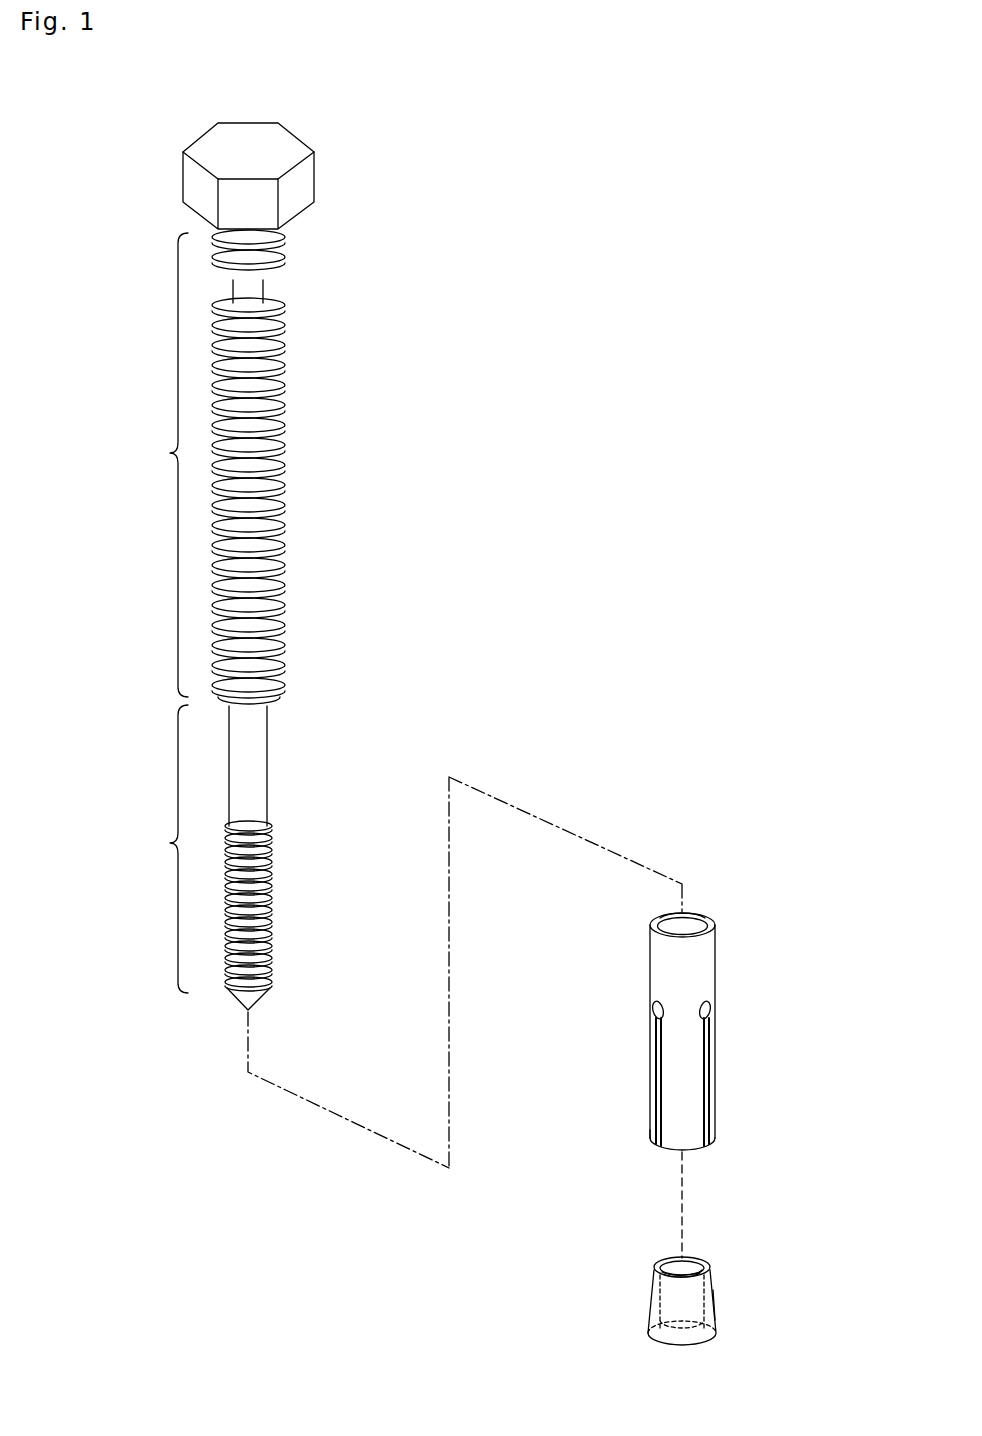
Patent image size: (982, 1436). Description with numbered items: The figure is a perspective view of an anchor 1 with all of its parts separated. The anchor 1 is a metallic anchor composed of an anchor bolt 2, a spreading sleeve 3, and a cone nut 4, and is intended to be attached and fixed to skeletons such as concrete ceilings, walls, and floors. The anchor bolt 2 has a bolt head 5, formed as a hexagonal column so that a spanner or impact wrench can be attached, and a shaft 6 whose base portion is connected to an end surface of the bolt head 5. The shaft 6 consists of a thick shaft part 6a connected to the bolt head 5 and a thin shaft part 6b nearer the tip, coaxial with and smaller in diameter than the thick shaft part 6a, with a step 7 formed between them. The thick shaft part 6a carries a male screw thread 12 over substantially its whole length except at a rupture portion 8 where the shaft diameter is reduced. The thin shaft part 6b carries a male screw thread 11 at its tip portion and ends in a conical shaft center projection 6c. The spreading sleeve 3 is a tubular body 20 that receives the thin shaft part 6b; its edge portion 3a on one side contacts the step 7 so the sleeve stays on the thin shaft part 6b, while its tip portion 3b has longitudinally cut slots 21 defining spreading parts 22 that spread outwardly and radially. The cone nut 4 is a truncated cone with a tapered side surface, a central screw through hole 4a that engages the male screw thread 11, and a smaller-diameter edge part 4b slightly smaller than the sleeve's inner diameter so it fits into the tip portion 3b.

The anchor 1 is at (634, 122).
The anchor bolt 2 is at (474, 311).
The spreading sleeve 3 is at (612, 979).
The edge portion 3a is at (709, 908).
The tip portion 3b is at (649, 1155).
The cone nut 4 is at (648, 1291).
The screw through hole 4a is at (716, 1305).
The smaller-diameter edge part 4b is at (695, 1262).
The bolt head 5 is at (285, 143).
The shaft 6 is at (370, 556).
The thick shaft part 6a is at (176, 453).
The thin shaft part 6b is at (176, 843).
The shaft center projection 6c is at (263, 1017).
The step 7 is at (284, 709).
The rupture portion 8 is at (282, 289).
The male screw thread 11 is at (270, 885).
The male screw thread 12 is at (268, 462).
The tubular body 20 is at (716, 951).
The slots 21 is at (655, 1051).
The spreading parts 22 is at (650, 1095).